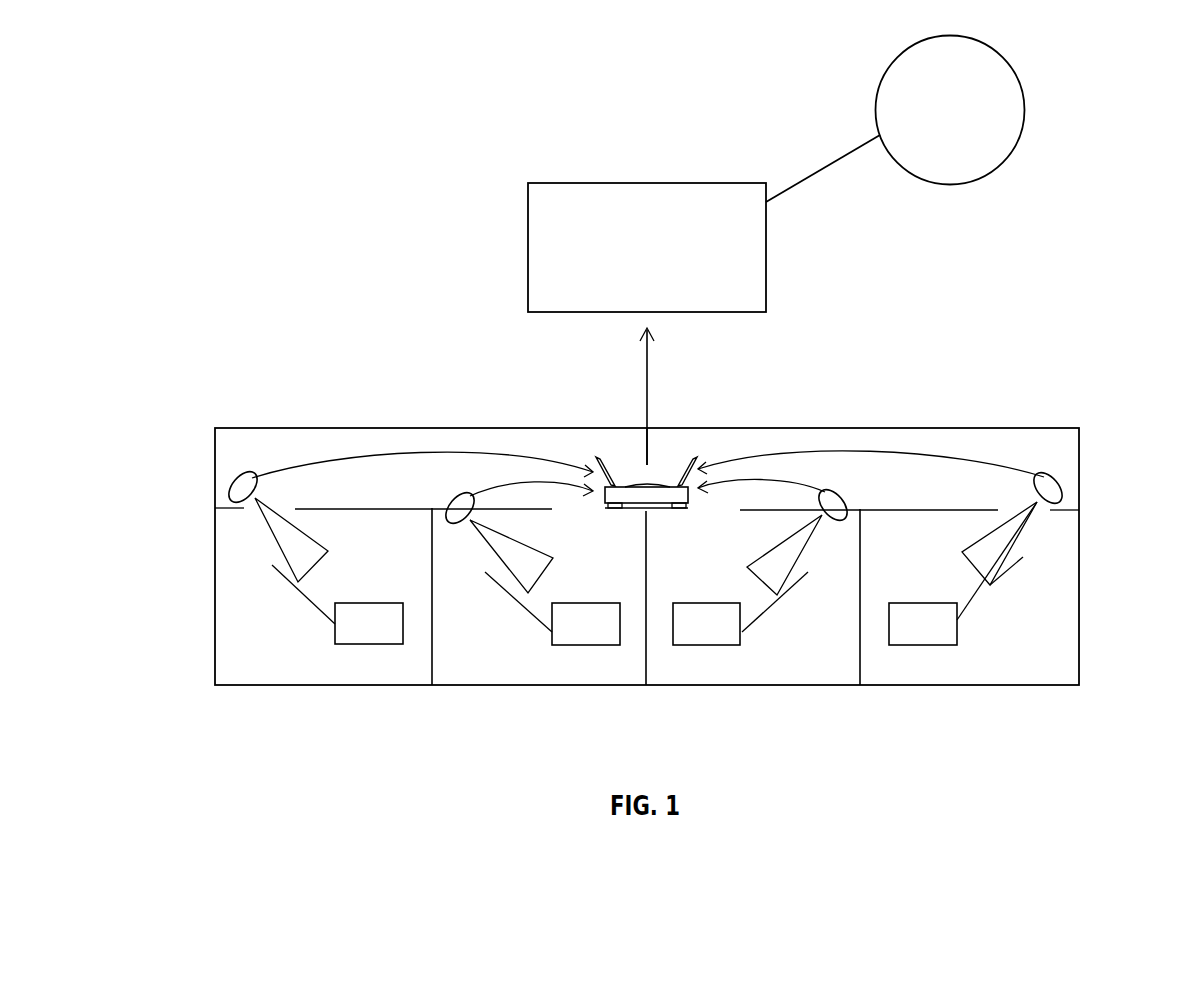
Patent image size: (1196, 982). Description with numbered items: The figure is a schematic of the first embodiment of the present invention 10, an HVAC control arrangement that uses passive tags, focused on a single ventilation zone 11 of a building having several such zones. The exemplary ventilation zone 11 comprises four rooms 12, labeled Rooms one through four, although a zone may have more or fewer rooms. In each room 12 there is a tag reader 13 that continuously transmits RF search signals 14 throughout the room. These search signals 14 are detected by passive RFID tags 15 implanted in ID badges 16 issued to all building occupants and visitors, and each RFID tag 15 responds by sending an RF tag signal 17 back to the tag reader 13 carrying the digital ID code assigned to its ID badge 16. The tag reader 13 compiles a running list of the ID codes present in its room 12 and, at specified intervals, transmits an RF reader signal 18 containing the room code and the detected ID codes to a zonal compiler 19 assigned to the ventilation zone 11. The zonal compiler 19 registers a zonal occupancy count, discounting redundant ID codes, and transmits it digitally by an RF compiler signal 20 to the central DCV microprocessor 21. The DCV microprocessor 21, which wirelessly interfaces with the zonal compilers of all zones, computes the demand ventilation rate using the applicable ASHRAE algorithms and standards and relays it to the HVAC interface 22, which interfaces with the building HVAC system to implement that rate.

The first embodiment of the present invention 10 is at (1080, 90).
The ventilation zone 11 is at (1098, 403).
The room 12 is at (647, 596).
The tag reader 13 is at (237, 475).
The RF search signal 14 is at (270, 528).
The passive RFID tag 15 is at (352, 637).
The ID badge 16 is at (368, 650).
The RF tag signal 17 is at (278, 585).
The RF reader signal 18 is at (547, 480).
The zonal compiler 19 is at (663, 483).
The RF compiler signal 20 is at (645, 372).
The DCV microprocessor 21 is at (560, 182).
The HVAC interface 22 is at (967, 183).